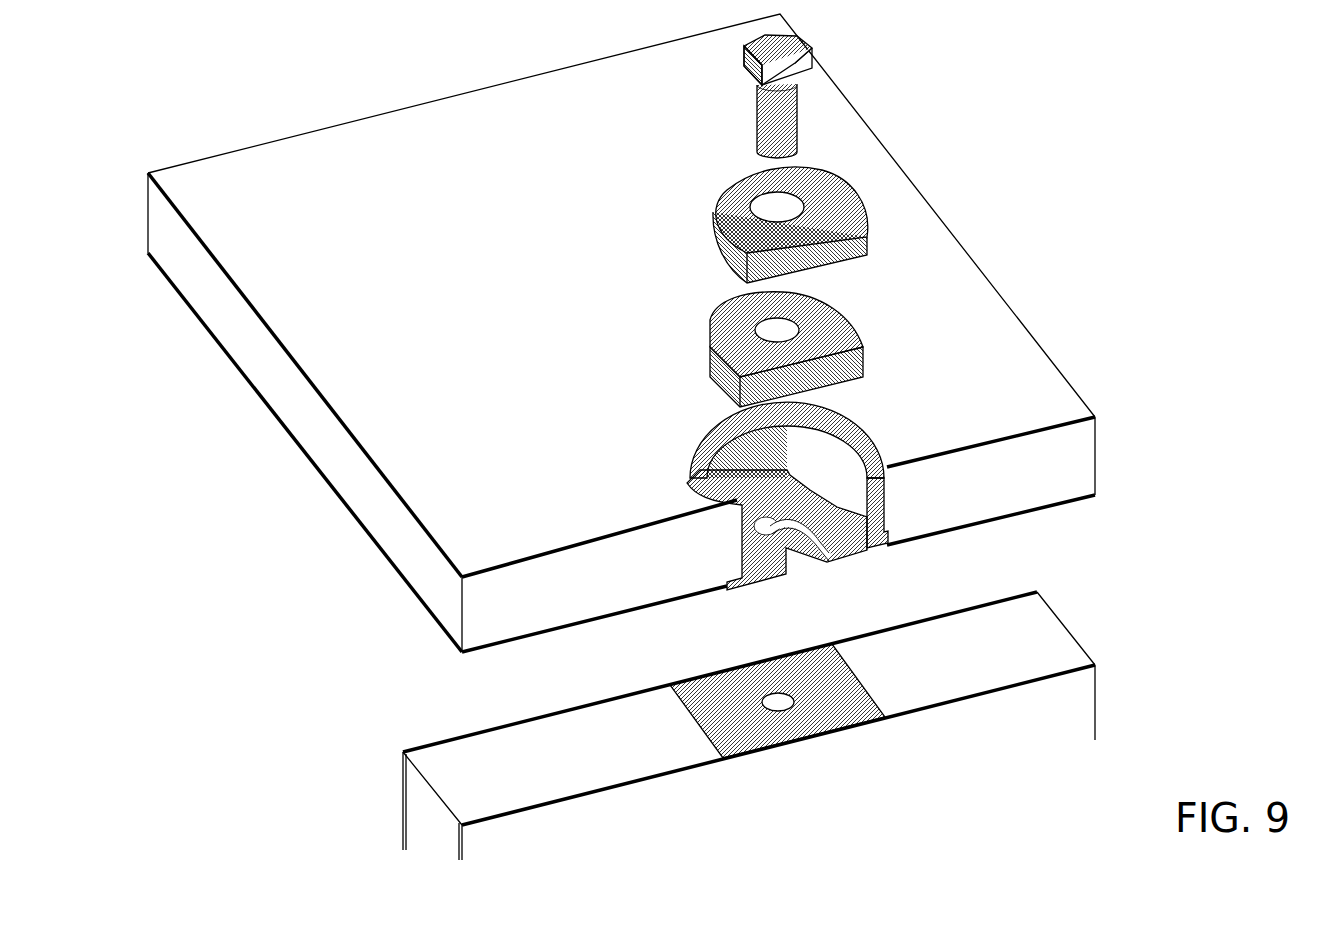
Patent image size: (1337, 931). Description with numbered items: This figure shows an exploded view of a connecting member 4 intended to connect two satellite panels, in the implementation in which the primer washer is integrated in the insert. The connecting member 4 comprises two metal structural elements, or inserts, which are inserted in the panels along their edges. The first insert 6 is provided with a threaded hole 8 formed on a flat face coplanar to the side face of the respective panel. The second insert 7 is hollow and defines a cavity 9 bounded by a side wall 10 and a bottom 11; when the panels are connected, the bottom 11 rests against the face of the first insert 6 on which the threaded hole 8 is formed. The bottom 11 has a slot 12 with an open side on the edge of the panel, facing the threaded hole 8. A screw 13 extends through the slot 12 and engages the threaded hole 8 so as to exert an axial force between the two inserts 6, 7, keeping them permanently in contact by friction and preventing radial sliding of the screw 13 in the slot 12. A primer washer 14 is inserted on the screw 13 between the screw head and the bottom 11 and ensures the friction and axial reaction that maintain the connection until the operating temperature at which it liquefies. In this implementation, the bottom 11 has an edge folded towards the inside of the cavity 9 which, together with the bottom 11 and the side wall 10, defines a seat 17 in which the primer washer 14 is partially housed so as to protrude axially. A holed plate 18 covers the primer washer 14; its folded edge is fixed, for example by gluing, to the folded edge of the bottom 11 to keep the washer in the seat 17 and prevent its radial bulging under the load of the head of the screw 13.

The connecting member 4 is at (624, 380).
The first insert 6 is at (827, 710).
The second insert 7 is at (789, 541).
The threaded hole 8 is at (768, 690).
The cavity 9 is at (818, 450).
The side wall 10 is at (780, 446).
The bottom 11 is at (838, 503).
The slot 12 is at (810, 566).
The screw 13 is at (766, 118).
The primer washer 14 is at (713, 362).
The seat 17 is at (812, 522).
The holed plate 18 is at (713, 200).